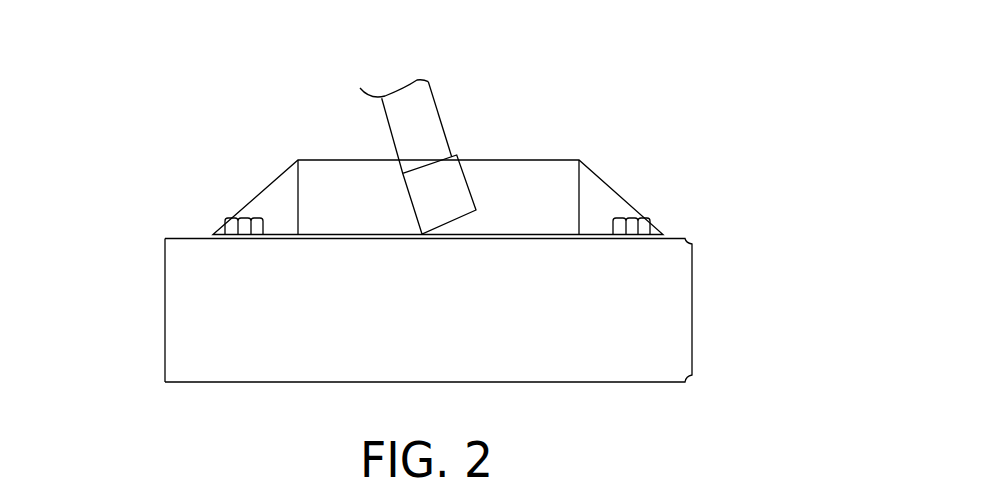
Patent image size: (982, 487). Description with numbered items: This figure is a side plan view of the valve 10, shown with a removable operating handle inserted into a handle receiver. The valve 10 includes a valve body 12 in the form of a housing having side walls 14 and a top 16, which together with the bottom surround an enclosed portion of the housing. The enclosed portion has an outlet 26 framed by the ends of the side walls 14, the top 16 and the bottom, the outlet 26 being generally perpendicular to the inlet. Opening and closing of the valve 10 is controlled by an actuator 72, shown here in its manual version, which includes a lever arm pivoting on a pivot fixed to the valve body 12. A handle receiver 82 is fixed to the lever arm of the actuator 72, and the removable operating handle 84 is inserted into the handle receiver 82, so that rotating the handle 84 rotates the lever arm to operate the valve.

The valve 10 is at (758, 108).
The valve body 12 is at (657, 305).
The side walls 14 is at (450, 303).
The top 16 is at (196, 227).
The outlet 26 is at (128, 308).
The actuator 72 is at (501, 166).
The handle receiver 82 is at (435, 192).
The removable operating handle 84 is at (418, 115).